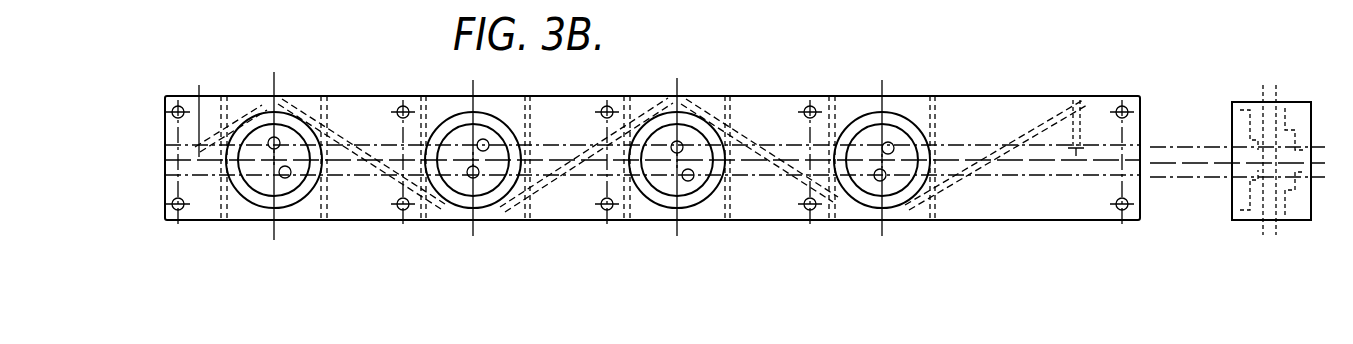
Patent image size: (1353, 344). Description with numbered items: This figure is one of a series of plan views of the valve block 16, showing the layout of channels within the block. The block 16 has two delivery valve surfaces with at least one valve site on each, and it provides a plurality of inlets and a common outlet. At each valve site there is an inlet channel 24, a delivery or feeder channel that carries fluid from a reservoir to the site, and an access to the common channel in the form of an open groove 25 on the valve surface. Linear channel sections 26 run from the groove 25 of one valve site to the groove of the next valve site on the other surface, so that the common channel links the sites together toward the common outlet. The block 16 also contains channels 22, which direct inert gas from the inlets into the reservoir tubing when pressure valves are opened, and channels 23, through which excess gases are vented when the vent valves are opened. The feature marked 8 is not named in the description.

The passage 8 is at (1085, 100).
The valve block 16 is at (1044, 224).
The channels 22 is at (307, 222).
The channels 23 is at (244, 222).
The inlet channel 24 is at (302, 100).
The groove 25 is at (279, 97).
The linear channel sections 26 is at (236, 97).